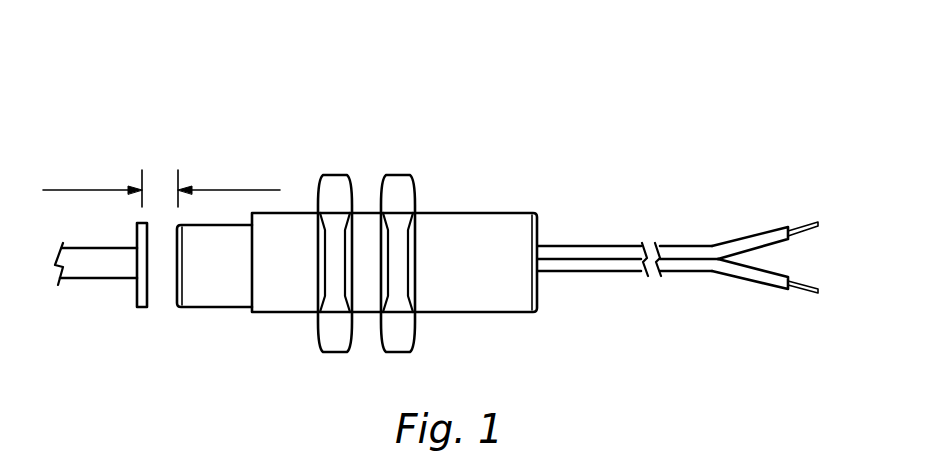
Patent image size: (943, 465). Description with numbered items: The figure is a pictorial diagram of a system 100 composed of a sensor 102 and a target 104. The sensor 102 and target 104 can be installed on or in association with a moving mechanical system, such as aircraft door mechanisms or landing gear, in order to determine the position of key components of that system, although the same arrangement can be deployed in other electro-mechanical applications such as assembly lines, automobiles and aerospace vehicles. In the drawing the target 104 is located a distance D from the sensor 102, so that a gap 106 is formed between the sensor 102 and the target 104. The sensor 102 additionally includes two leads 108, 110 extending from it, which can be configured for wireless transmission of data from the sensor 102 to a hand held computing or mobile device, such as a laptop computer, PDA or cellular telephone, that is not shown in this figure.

The system 100 is at (148, 74).
The sensor 102 is at (460, 213).
The target 104 is at (110, 279).
The gap 106 is at (160, 173).
The lead 108 is at (750, 232).
The lead 110 is at (750, 279).